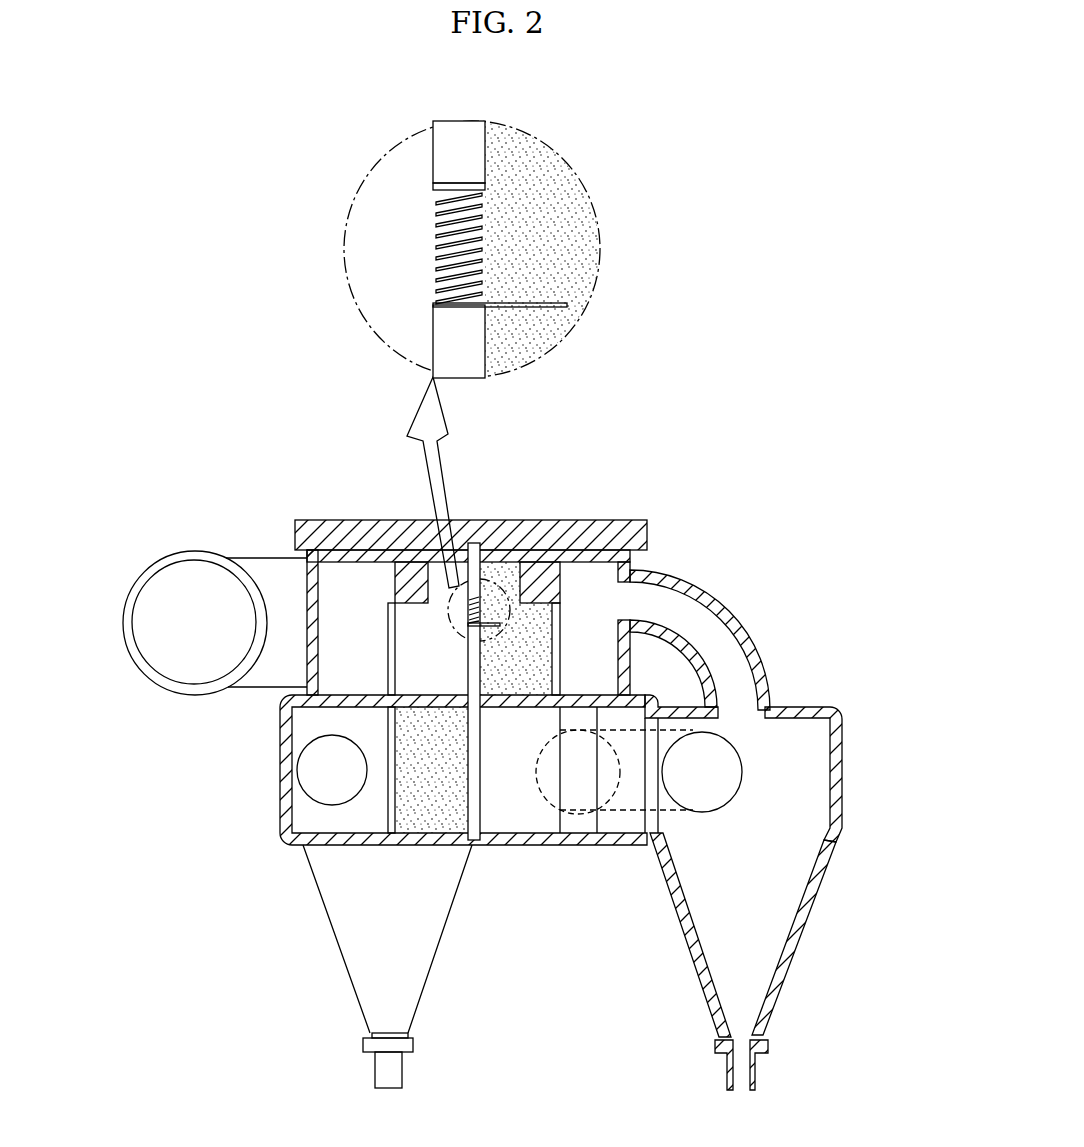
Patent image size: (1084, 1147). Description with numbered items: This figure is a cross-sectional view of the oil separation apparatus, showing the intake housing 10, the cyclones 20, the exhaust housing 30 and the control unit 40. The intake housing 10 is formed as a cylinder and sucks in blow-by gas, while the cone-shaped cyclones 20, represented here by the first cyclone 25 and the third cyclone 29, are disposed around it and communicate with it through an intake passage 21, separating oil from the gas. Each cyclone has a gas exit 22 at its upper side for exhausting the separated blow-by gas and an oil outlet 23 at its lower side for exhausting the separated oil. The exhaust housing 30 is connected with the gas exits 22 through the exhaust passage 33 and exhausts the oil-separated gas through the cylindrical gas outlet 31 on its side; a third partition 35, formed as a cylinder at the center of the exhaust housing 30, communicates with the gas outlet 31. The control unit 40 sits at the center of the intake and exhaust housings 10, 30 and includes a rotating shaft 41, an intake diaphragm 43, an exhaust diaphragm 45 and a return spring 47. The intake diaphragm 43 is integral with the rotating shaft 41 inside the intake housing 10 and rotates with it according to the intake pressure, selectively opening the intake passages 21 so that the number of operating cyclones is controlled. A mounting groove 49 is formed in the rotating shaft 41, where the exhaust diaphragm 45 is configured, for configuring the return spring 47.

The intake housing 10 is at (279, 791).
The cyclones 20 is at (806, 952).
The intake passage 21 is at (625, 815).
The gas exit 22 is at (754, 711).
The oil outlet 23 is at (740, 1066).
The first cyclone 25 is at (350, 951).
The third cyclone 29 is at (813, 882).
The exhaust housing 30 is at (305, 557).
The gas outlet 31 is at (164, 676).
The exhaust passage 33 is at (723, 612).
The third partition 35 is at (560, 625).
The control unit 40 is at (462, 668).
The rotating shaft 41 is at (487, 838).
The intake diaphragm 43 is at (400, 793).
The exhaust diaphragm 45 is at (520, 622).
The return spring 47 is at (466, 590).
The mounting groove 49 is at (483, 193).